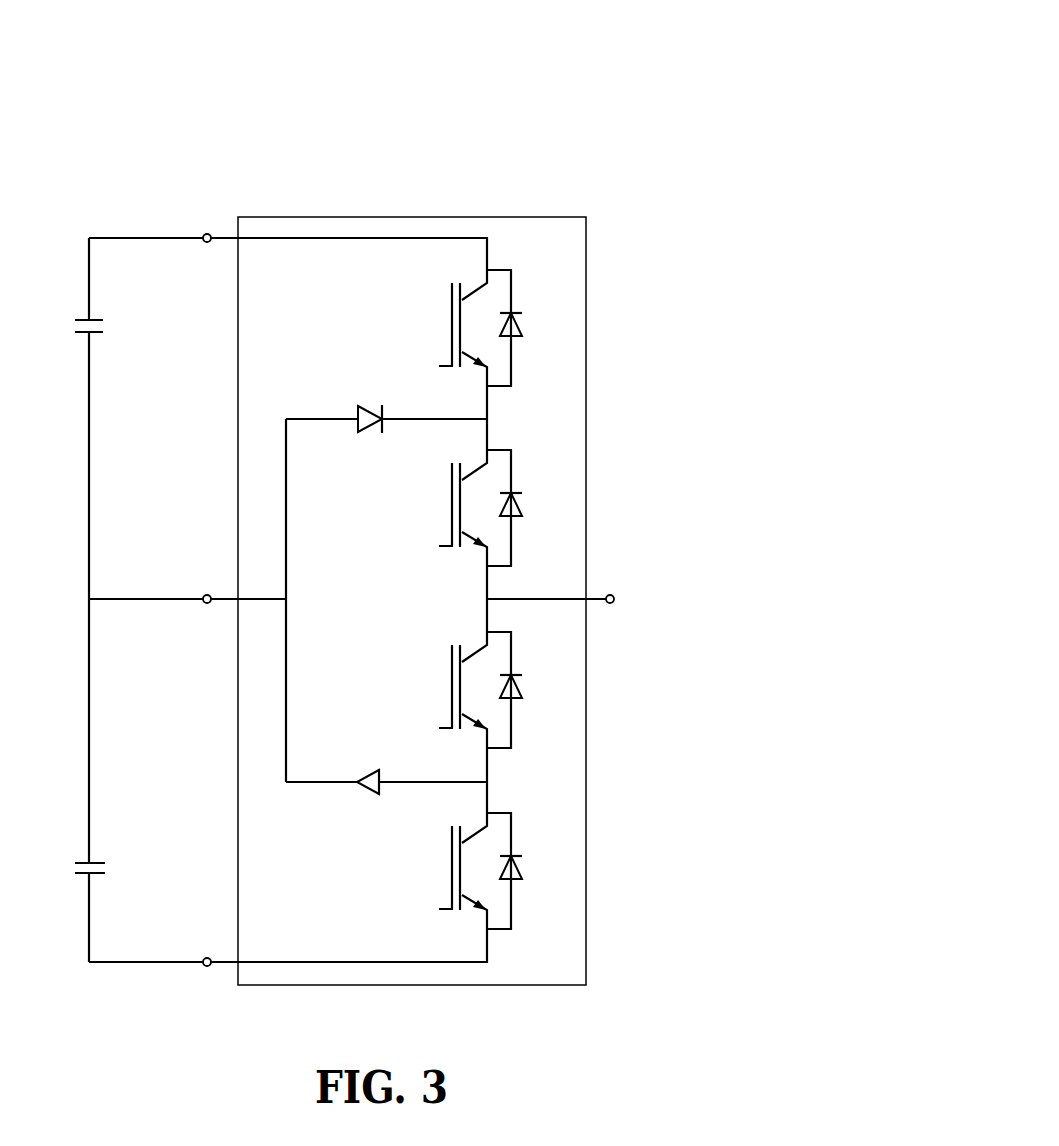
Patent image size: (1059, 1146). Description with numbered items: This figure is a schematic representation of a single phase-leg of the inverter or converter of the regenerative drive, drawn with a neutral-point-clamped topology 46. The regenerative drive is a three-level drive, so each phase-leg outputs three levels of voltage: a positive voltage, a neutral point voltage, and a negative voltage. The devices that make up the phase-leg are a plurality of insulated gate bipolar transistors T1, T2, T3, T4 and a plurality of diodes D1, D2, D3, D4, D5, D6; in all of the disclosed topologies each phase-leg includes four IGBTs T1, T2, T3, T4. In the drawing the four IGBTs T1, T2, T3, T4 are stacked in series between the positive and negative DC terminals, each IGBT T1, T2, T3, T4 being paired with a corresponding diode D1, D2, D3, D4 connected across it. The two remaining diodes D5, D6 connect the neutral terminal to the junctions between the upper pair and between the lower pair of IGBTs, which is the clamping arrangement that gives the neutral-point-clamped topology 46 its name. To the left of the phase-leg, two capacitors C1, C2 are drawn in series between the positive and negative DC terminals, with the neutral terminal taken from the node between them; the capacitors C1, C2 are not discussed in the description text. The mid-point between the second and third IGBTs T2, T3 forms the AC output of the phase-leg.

The neutral-point-clamped topology 46 is at (618, 101).
The insulated gate bipolar transistor T1 is at (463, 328).
The insulated gate bipolar transistor T2 is at (463, 508).
The insulated gate bipolar transistor T3 is at (463, 690).
The insulated gate bipolar transistor T4 is at (463, 871).
The diode D1 is at (531, 325).
The diode D2 is at (531, 505).
The diode D3 is at (531, 687).
The diode D4 is at (531, 868).
The diode D5 is at (370, 434).
The diode D6 is at (370, 765).
The upper DC-link capacitor C1 is at (114, 328).
The lower DC-link capacitor C2 is at (114, 872).